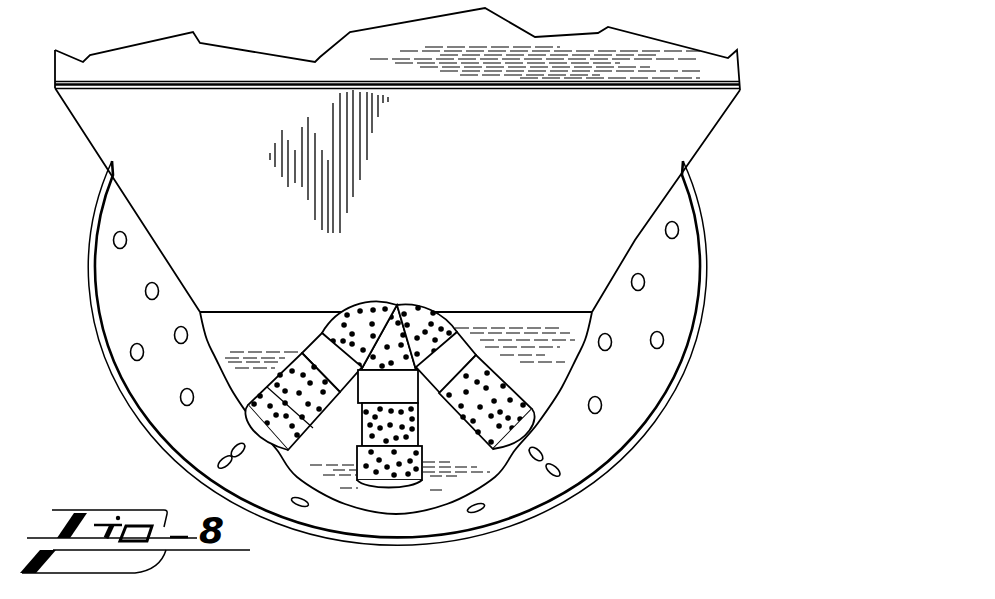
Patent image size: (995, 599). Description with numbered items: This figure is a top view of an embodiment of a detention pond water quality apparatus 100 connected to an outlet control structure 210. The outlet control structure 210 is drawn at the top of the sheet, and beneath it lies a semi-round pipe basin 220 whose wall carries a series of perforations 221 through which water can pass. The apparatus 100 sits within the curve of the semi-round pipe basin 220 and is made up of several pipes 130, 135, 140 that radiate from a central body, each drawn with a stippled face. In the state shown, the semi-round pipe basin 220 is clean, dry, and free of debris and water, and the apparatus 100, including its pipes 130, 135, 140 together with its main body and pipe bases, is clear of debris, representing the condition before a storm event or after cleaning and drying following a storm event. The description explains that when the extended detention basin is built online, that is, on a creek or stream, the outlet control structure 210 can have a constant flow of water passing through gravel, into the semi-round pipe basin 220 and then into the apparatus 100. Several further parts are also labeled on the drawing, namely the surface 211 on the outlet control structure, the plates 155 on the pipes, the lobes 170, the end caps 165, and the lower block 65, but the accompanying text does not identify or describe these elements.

The outlet control structure 210 is at (758, 135).
The housing inner wall 211 is at (458, 160).
The semi-round pipe basin 220 is at (668, 385).
The perforations 221 is at (132, 350).
The detention pond water quality apparatus 100 is at (270, 155).
The upper abrasive lobes 170 is at (319, 345).
The top plates 155 is at (401, 398).
The pipe 130 is at (275, 380).
The pipe 135 is at (362, 422).
The pipe 140 is at (457, 407).
The bottom abrasive block 65 is at (377, 491).
The rounded end caps 165 is at (250, 423).